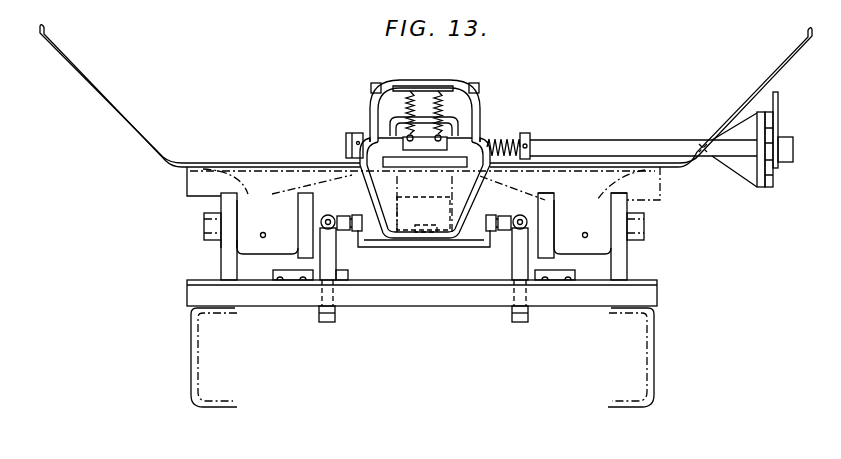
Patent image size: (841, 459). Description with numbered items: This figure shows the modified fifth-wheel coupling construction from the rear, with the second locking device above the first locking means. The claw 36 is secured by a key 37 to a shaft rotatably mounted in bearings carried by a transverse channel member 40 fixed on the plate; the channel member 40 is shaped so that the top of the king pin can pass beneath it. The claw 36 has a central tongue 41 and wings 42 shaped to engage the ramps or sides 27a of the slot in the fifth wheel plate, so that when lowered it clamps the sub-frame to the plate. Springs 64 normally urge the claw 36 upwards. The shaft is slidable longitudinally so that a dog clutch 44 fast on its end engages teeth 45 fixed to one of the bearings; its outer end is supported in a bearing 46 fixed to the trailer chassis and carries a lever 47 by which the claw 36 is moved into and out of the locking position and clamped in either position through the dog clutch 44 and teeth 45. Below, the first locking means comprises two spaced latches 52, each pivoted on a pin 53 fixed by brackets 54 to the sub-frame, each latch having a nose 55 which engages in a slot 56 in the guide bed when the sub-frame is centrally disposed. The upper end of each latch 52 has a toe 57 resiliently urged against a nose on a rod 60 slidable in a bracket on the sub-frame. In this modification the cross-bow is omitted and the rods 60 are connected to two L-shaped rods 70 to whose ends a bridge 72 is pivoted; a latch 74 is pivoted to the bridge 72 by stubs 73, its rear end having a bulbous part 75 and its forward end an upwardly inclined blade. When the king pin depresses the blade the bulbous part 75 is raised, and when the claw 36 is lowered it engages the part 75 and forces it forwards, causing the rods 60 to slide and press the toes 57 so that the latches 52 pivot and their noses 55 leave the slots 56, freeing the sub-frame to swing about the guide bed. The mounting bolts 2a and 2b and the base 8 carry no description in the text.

The bolt 2a is at (204, 222).
The nut 2b is at (222, 243).
The base plate 8 is at (402, 276).
The ramps or sides of the slot 27a is at (352, 175).
The claw 36 is at (466, 147).
The key 37 is at (572, 148).
The transverse channel member 40 is at (466, 107).
The central tongue 41 is at (475, 220).
The wings 42 is at (519, 215).
The dog clutch 44 is at (352, 133).
The teeth 45 is at (347, 137).
The bearing 46 is at (794, 148).
The lever 47 is at (779, 100).
The latches 52 is at (336, 257).
The pin 53 is at (340, 274).
The brackets 54 is at (277, 270).
The nose 55 is at (334, 281).
The slot 56 is at (322, 296).
The toe 57 is at (328, 215).
The rod 60 is at (320, 222).
The springs 64 is at (413, 107).
The L-shaped rods 70 is at (494, 232).
The bridge 72 is at (433, 240).
The stubs 73 is at (452, 238).
The latch 74 is at (410, 218).
The bulbous part 75 is at (378, 201).